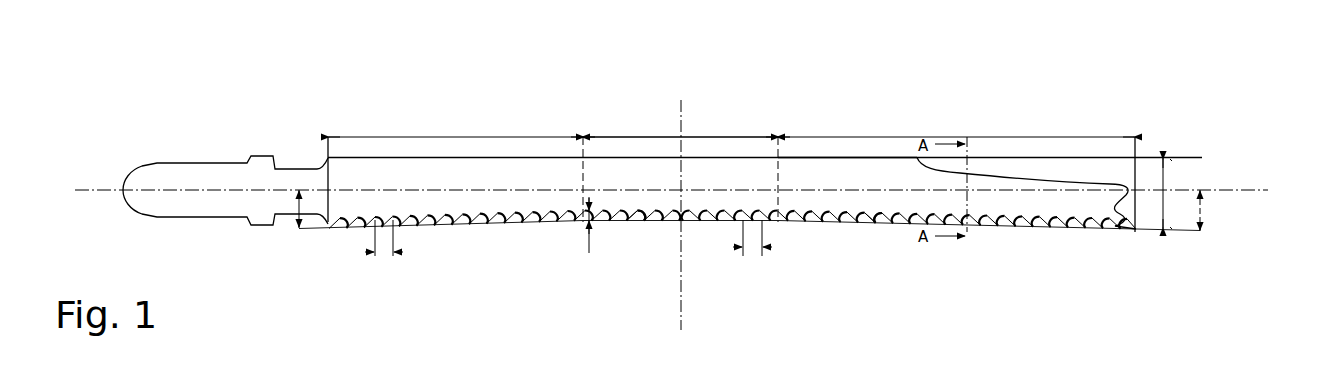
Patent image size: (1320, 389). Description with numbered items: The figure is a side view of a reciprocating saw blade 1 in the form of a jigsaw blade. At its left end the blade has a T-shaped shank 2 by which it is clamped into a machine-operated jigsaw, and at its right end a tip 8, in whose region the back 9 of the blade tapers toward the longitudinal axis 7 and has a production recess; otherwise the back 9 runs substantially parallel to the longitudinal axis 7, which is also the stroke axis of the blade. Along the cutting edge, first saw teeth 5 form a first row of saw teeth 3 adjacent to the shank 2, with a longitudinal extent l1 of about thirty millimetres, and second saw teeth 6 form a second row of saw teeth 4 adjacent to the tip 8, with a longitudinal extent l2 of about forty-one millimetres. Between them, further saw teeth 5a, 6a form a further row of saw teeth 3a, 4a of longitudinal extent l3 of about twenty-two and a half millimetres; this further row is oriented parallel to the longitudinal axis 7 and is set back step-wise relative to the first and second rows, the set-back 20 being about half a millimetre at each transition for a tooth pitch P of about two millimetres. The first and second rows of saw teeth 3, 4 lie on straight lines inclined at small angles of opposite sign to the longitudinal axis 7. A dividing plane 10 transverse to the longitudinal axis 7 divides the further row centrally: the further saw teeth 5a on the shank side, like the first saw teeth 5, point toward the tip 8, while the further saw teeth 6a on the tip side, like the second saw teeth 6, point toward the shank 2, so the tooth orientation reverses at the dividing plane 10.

The reciprocating saw blade 1 is at (505, 89).
The shank 2 is at (167, 152).
The first row of saw teeth 3 is at (504, 278).
The second row of saw teeth 4 is at (909, 278).
The first saw teeth 5 is at (432, 230).
The second saw teeth 6 is at (879, 230).
The longitudinal axis 7 is at (1242, 190).
The tip 8 is at (1133, 202).
The back 9 is at (810, 157).
The dividing plane 10 is at (682, 97).
The set-back 20 is at (589, 253).
The further row of saw teeth 3a is at (628, 226).
The further row of saw teeth 4a is at (731, 223).
The further saw teeth 5a is at (610, 222).
The further saw teeth 6a is at (778, 222).
The pitch P is at (386, 253).
The longitudinal extent of the first row of saw teeth l1 is at (425, 137).
The longitudinal extent of the second row of saw teeth l2 is at (873, 137).
The longitudinal extent of the further row of saw teeth l3 is at (640, 137).